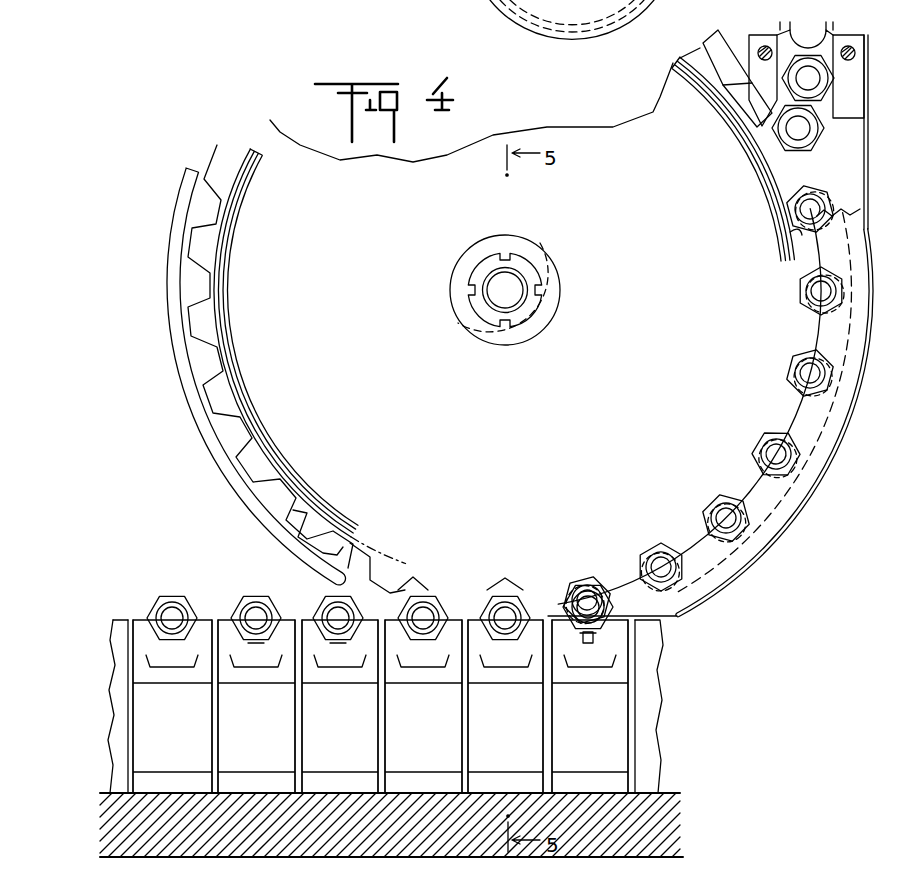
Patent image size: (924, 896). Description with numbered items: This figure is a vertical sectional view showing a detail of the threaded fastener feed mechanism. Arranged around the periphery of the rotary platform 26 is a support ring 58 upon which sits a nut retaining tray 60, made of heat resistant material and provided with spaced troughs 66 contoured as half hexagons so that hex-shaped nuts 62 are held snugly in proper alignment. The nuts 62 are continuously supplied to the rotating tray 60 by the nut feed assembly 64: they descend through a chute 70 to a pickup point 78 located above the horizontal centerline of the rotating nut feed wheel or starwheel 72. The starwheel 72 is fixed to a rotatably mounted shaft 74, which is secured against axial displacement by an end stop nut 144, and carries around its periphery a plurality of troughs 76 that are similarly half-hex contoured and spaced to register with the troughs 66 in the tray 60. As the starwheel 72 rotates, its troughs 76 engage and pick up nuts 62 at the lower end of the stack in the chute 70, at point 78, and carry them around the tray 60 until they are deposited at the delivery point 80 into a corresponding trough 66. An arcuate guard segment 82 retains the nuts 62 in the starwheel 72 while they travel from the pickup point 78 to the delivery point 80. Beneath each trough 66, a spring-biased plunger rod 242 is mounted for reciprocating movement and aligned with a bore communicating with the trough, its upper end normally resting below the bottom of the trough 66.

The nut feed assembly 64 is at (143, 136).
The nut feed wheel 72 is at (310, 183).
The shaft 74 is at (497, 282).
The end stop nut 144 is at (526, 271).
The chute 70 is at (853, 67).
The pickup point 78 is at (776, 149).
The nuts 62 is at (819, 140).
The troughs 76 is at (808, 270).
The arcuate guard segment 82 is at (820, 410).
The delivery point 80 is at (504, 592).
The nut retaining tray 60 is at (218, 619).
The support ring 58 is at (115, 722).
The platform 26 is at (150, 827).
The troughs 66 is at (318, 643).
The plunger rod 242 is at (589, 646).